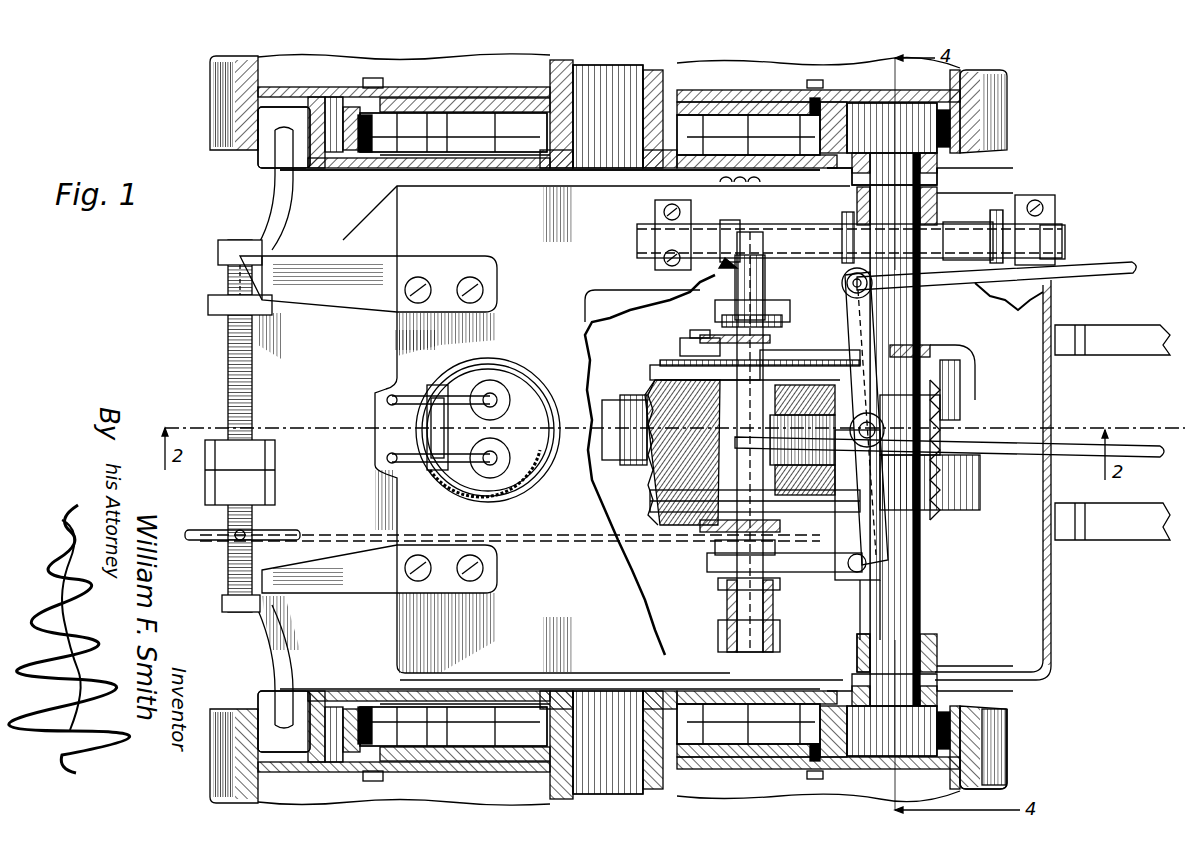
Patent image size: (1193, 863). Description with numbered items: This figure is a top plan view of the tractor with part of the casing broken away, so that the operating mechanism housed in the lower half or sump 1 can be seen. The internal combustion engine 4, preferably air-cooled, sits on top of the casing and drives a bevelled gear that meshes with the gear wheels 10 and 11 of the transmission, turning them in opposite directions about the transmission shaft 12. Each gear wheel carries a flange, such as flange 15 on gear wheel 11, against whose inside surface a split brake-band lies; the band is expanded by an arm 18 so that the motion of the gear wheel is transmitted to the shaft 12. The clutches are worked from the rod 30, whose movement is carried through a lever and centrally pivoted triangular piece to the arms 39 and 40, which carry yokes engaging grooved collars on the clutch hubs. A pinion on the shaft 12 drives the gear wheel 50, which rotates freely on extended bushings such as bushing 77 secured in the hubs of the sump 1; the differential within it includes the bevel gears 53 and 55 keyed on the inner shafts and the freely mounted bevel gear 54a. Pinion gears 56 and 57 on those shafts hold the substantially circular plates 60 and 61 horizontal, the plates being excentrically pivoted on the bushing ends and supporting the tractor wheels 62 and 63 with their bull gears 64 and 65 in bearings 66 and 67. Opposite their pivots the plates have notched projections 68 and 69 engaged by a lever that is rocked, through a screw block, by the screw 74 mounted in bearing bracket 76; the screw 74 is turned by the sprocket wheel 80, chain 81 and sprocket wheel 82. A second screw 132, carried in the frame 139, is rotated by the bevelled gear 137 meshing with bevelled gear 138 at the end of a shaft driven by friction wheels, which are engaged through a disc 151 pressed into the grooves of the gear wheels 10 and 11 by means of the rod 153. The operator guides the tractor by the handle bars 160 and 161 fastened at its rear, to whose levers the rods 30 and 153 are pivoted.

The lower half or sump 1 is at (1050, 660).
The internal combustion engine 4 is at (505, 365).
The gear wheel 10 is at (660, 500).
The gear wheel 11 is at (650, 352).
The transmission shaft 12 is at (737, 610).
The flange 15 is at (300, 260).
The arm 18 is at (1010, 195).
The rod 30 is at (1100, 266).
The arm 39 is at (820, 572).
The arm 40 is at (812, 292).
The gear wheel 50 is at (990, 415).
The bevel gear 53 is at (950, 395).
The bevel gear 54a is at (958, 370).
The bevel gear 55 is at (955, 348).
The pinion gear 56 is at (975, 150).
The pinion gear 57 is at (1010, 735).
The circular plate 60 is at (350, 695).
The circular plate 61 is at (370, 168).
The tractor wheel 62 is at (1010, 765).
The tractor wheel 63 is at (1005, 105).
The bull gear 64 is at (355, 726).
The bull gear 65 is at (350, 140).
The bearing 66 is at (680, 726).
The bearing 67 is at (670, 135).
The notched projection 68 is at (265, 710).
The notched projection 69 is at (255, 160).
The screw 74 is at (228, 340).
The bearing bracket 76 is at (312, 600).
The bushing 77 is at (935, 640).
The sprocket wheel 80 is at (205, 543).
The chain 81 is at (548, 545).
The sprocket wheel 82 is at (695, 540).
The screw 132 is at (1065, 240).
The bevelled gear 137 is at (727, 226).
The bevelled gear 138 is at (722, 262).
The frame 139 is at (655, 268).
The disc 151 is at (670, 360).
The rod 153 is at (1090, 445).
The handle bar 160 is at (1150, 325).
The handle bar 161 is at (1135, 540).